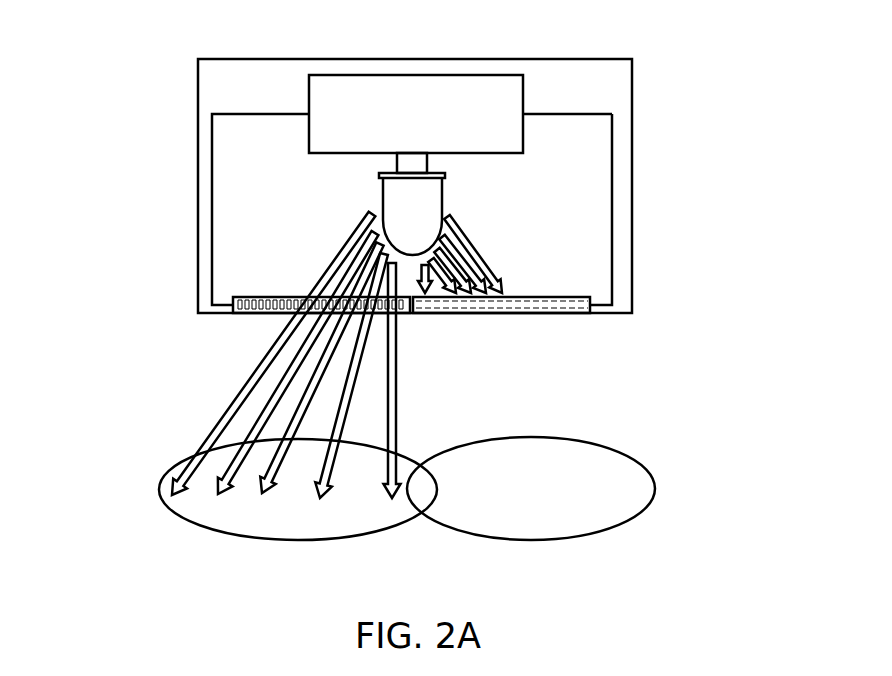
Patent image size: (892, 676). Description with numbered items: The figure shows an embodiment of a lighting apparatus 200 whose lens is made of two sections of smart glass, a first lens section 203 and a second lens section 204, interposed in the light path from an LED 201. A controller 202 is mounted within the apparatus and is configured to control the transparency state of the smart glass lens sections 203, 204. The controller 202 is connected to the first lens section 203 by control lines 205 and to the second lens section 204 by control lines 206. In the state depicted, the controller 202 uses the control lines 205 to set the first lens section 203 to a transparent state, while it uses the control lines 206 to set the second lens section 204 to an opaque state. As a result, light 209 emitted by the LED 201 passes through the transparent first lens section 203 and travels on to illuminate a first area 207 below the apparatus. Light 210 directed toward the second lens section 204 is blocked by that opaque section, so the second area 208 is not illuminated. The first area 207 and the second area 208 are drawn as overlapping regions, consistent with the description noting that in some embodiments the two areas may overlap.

The lighting apparatus 200 is at (657, 80).
The LED 201 is at (383, 200).
The controller 202 is at (450, 75).
The first lens section 203 is at (253, 315).
The second lens section 204 is at (573, 315).
The control lines 205 is at (212, 232).
The control lines 206 is at (612, 186).
The first area 207 is at (202, 513).
The second area 208 is at (633, 497).
The light 209 is at (237, 398).
The light 210 is at (488, 248).